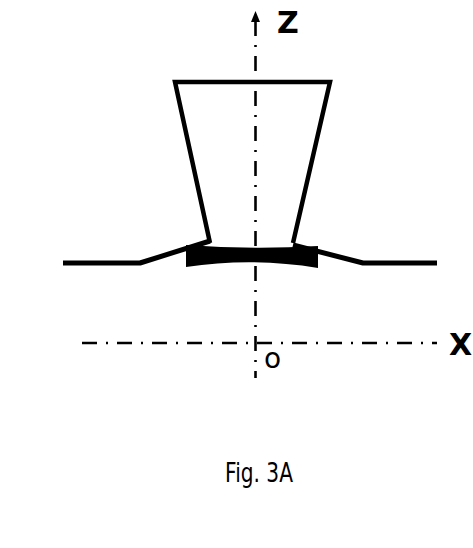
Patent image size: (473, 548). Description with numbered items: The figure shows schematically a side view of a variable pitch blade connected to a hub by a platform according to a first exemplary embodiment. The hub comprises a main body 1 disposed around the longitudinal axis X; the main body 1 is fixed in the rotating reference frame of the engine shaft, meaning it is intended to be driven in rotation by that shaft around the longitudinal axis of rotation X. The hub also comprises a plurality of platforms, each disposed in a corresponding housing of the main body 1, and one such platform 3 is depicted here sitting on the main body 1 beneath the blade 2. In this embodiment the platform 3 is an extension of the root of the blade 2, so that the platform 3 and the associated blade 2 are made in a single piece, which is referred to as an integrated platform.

The main body 1 is at (117, 261).
The blade 2 is at (287, 140).
The platform 3 is at (298, 238).